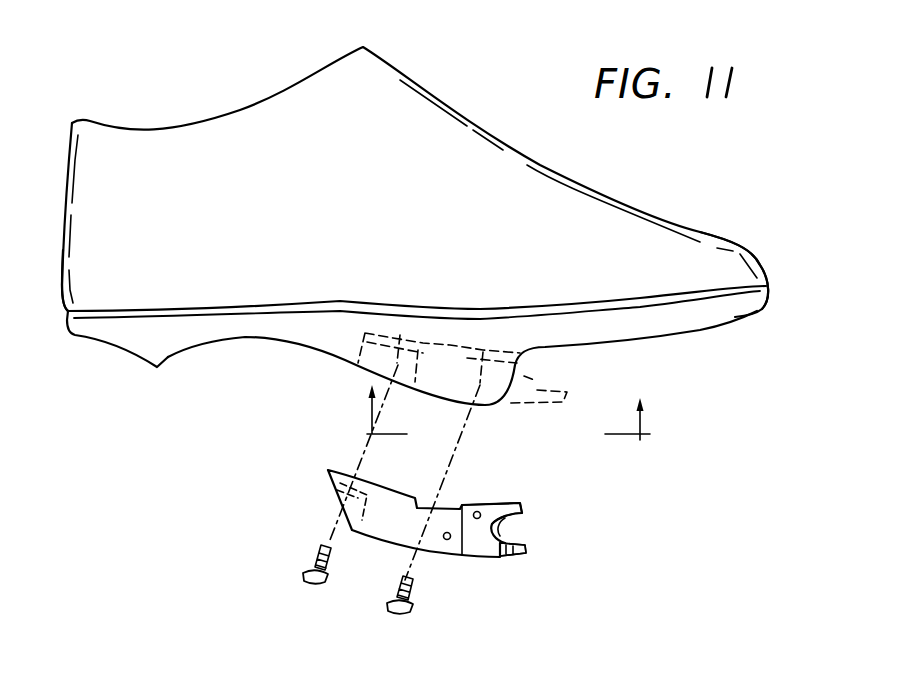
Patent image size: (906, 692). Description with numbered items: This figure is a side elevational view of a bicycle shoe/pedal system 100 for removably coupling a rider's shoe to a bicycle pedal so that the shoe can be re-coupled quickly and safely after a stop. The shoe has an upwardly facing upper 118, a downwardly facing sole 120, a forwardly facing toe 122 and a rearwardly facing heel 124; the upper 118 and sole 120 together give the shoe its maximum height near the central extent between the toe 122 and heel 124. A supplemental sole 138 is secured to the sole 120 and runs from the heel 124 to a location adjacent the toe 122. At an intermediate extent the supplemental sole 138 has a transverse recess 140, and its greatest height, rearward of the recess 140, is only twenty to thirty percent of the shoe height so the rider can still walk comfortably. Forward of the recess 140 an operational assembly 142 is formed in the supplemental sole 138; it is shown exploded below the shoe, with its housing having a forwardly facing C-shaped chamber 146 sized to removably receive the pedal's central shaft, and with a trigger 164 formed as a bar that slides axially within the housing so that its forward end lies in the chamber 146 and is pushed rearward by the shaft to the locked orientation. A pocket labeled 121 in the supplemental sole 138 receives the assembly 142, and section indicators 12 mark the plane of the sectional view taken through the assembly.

The bicycle shoe/pedal system 100 is at (190, 108).
The upper 118 is at (474, 124).
The toe 122 is at (763, 266).
The heel 124 is at (64, 273).
The sole 120 is at (280, 305).
The supplemental sole 138 is at (183, 343).
The transverse recess 140 is at (222, 343).
The midsole recess 121 is at (440, 350).
The section line 12- 12 is at (509, 414).
The operational assembly 142 is at (550, 534).
The C-shaped chamber 146 is at (513, 525).
The trigger 164 is at (518, 557).